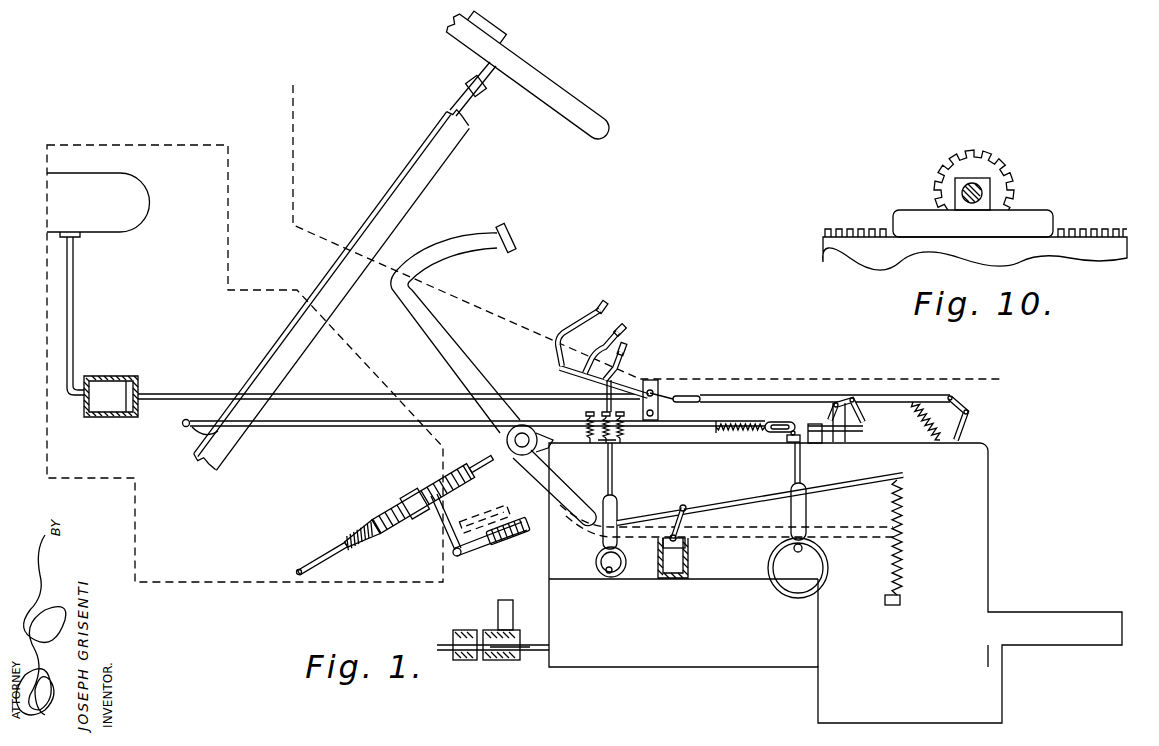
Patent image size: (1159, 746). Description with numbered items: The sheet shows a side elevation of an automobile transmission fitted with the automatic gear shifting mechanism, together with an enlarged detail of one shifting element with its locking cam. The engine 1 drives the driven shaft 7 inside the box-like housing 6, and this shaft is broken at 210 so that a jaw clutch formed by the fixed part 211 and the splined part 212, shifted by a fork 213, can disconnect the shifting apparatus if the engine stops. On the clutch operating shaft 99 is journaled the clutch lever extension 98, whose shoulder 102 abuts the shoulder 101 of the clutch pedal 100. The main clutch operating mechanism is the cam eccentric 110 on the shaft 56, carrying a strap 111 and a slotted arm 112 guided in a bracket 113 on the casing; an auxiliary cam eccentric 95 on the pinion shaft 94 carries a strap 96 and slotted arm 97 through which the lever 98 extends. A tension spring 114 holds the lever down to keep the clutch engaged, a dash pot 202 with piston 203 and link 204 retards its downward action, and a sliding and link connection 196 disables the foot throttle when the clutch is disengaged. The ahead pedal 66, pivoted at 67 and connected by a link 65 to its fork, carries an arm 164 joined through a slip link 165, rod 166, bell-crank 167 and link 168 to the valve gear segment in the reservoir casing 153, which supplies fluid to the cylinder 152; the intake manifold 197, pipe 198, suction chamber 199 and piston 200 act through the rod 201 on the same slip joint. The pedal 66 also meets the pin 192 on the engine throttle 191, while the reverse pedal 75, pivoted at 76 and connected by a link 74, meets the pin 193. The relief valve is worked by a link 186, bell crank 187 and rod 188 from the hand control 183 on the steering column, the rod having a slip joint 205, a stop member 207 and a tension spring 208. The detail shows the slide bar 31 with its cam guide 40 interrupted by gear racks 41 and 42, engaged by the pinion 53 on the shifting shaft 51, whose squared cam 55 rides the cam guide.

In FIG. 1, the engine 1 is at (146, 290).
In FIG. 1, the intake manifold 197 is at (90, 210).
In FIG. 1, the pipe 198 is at (75, 322).
In FIG. 1, the suction chamber 199 is at (106, 377).
In FIG. 1, the suction piston 200 is at (123, 412).
In FIG. 1, the rod 201 is at (330, 394).
In FIG. 1, the hand control lever 183 is at (413, 158).
In FIG. 1, the clutch pedal 100 is at (398, 291).
In FIG. 1, the clutch operating shaft 99 is at (512, 456).
In FIG. 1, the shoulder 102 is at (548, 439).
In FIG. 1, the sliding and link connection 196 is at (512, 544).
In FIG. 1, the link 74 is at (565, 386).
In FIG. 1, the reverse pedal 75 is at (580, 330).
In FIG. 1, the ahead pedal 66 is at (620, 336).
In FIG. 1, the engine throttle 191 is at (630, 350).
In FIG. 1, the pin 192 is at (560, 380).
In FIG. 1, the pin 193 is at (576, 380).
In FIG. 1, the pivot 76 is at (662, 390).
In FIG. 1, the arm 164 is at (670, 403).
In FIG. 1, the pivot 67 is at (641, 418).
In FIG. 1, the shoulder 101 is at (587, 425).
In FIG. 1, the link 65 is at (615, 440).
In FIG. 1, the slip link 165 is at (705, 395).
In FIG. 1, the rod 166 is at (912, 400).
In FIG. 1, the bell-crank 167 is at (968, 411).
In FIG. 1, the link 168 is at (985, 440).
In FIG. 1, the rod 188 is at (745, 424).
In FIG. 1, the slip joint connection 205 is at (778, 422).
In FIG. 1, the tension spring 208 is at (728, 433).
In FIG. 1, the bell crank 187 is at (848, 407).
In FIG. 1, the link 186 is at (848, 431).
In FIG. 1, the stop member 207 is at (820, 443).
In FIG. 1, the bracket 113 is at (790, 442).
In FIG. 1, the housing 6 is at (980, 489).
In FIG. 1, the cylinder 152 is at (1055, 616).
In FIG. 1, the casing 153 is at (1005, 695).
In FIG. 1, the slotted arm 97 is at (618, 500).
In FIG. 1, the strap 96 is at (596, 562).
In FIG. 1, the pinion shaft 94 is at (609, 574).
In FIG. 1, the cam eccentric 95 is at (622, 572).
In FIG. 1, the clutch lever extension 98 is at (735, 500).
In FIG. 1, the link 204 is at (684, 521).
In FIG. 1, the dash pot 202 is at (690, 565).
In FIG. 1, the piston 203 is at (688, 544).
In FIG. 1, the slotted arm 112 is at (807, 512).
In FIG. 1, the cam eccentric 110 is at (785, 580).
In FIG. 1, the strap 111 is at (828, 580).
In FIG. 1, the clutch operating shaft 56 is at (804, 550).
In FIG. 1, the tension spring 114 is at (903, 538).
In FIG. 1, the driven shaft 7 is at (538, 652).
In FIG. 1, the jaw clutch part 211 is at (462, 630).
In FIG. 1, the jaw clutch part 212 is at (492, 630).
In FIG. 1, the fork 213 is at (508, 612).
In FIG. 1, the break in shaft 210 is at (480, 660).
In FIG. 10, the slide bar 31 is at (1105, 250).
In FIG. 10, the gear rack 41 is at (848, 229).
In FIG. 10, the gear rack 42 is at (1112, 229).
In FIG. 10, the cam guide 40 is at (1058, 218).
In FIG. 10, the pinion 53 is at (974, 177).
In FIG. 10, the squared cam 55 is at (990, 177).
In FIG. 10, the intermediate-high shifting shaft 51 is at (963, 187).